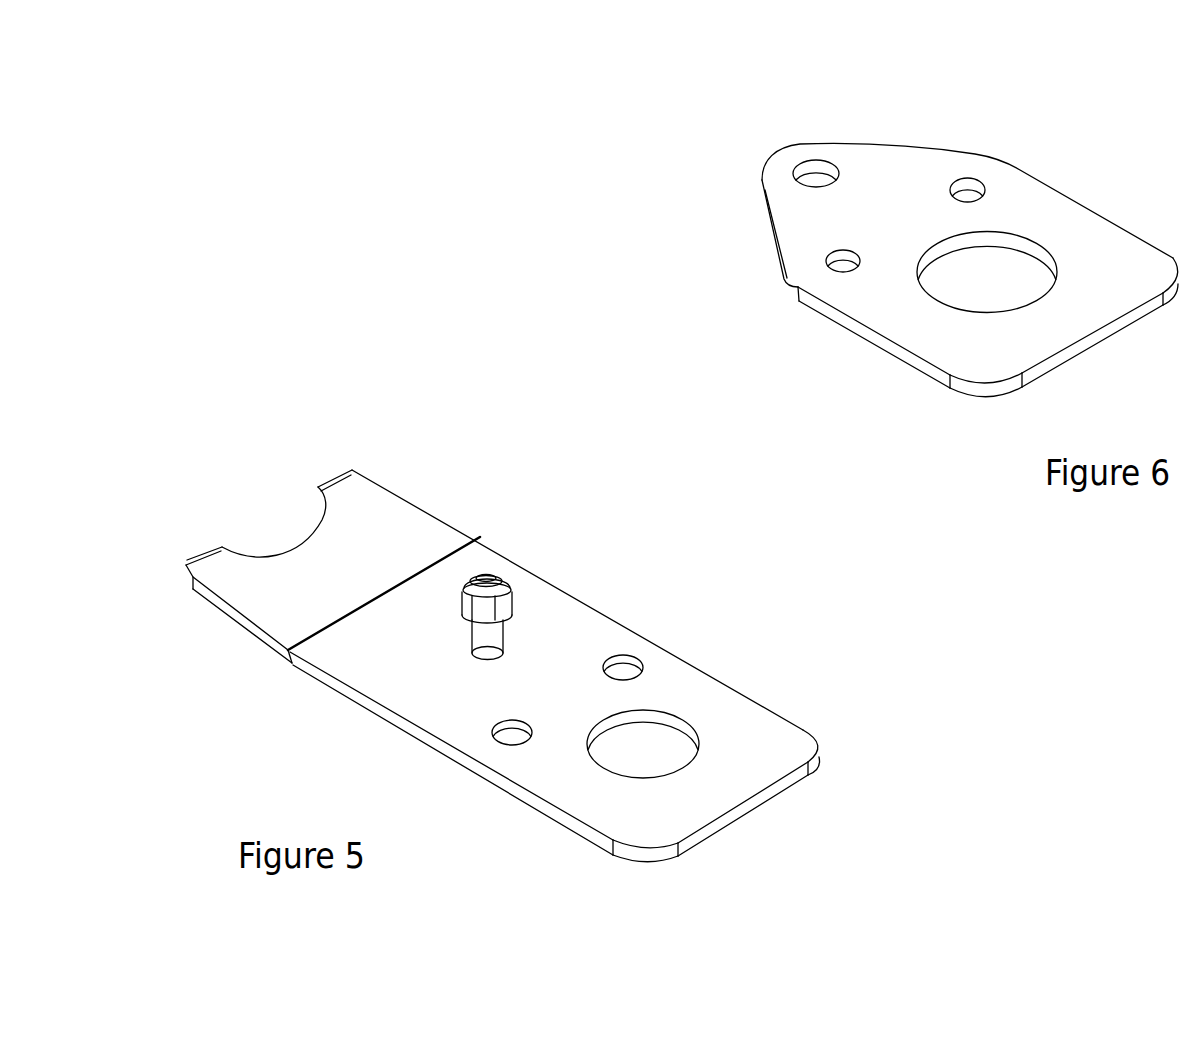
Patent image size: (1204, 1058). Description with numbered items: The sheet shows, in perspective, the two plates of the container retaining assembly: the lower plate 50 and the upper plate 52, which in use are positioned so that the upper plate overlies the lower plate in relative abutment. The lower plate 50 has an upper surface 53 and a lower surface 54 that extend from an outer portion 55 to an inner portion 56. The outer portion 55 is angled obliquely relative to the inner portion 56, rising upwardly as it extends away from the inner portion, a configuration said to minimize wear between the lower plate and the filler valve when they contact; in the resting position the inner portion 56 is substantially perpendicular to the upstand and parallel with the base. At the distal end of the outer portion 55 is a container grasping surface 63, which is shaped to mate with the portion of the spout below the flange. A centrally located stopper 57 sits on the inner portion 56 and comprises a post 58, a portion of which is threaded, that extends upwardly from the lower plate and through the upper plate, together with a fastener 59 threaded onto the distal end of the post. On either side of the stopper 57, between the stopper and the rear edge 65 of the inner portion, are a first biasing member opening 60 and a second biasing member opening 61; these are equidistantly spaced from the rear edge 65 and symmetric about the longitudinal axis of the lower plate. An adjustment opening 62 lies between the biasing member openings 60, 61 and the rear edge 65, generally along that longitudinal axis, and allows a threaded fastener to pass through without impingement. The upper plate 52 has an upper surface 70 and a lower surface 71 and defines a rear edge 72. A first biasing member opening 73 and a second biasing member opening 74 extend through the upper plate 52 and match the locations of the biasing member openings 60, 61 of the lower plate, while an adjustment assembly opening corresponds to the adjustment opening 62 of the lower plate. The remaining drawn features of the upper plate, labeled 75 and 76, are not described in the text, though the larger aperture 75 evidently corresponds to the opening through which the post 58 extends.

In FIG. 5, the lower plate 50 is at (640, 559).
In FIG. 5, the upper surface 53 is at (553, 590).
In FIG. 5, the lower surface 54 is at (604, 846).
In FIG. 5, the outer portion 55 is at (398, 492).
In FIG. 5, the inner portion 56 is at (772, 693).
In FIG. 5, the stopper 57 is at (489, 576).
In FIG. 5, the post 58 is at (503, 639).
In FIG. 5, the fastener 59 is at (512, 607).
In FIG. 5, the first biasing member opening 60 is at (497, 742).
In FIG. 5, the second biasing member opening 61 is at (645, 668).
In FIG. 5, the adjustment opening 62 is at (697, 760).
In FIG. 5, the container grasping surface 63 is at (250, 544).
In FIG. 5, the rear edge 65 is at (741, 815).
In FIG. 6, the upper plate 52 is at (1053, 139).
In FIG. 6, the upper surface 70 is at (912, 163).
In FIG. 6, the lower surface 71 is at (1032, 380).
In FIG. 6, the rear edge 72 is at (1092, 338).
In FIG. 6, the first biasing member opening 73 is at (830, 262).
In FIG. 6, the second biasing member opening 74 is at (984, 194).
In FIG. 6, the large aperture 75 is at (1050, 268).
In FIG. 6, the hole 76 is at (817, 158).